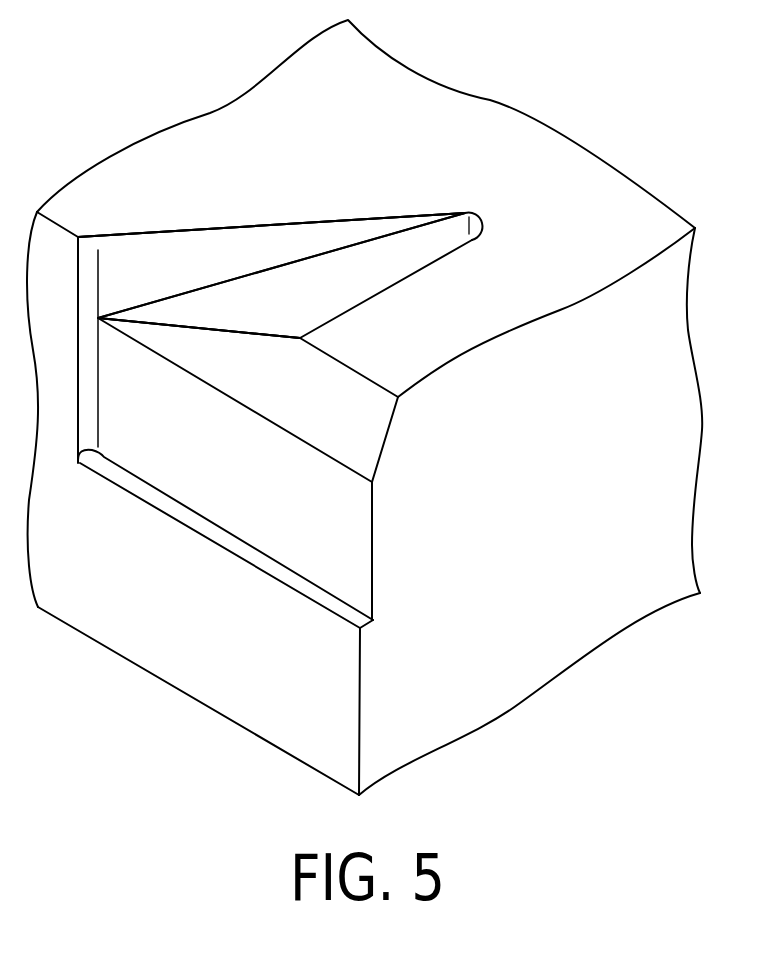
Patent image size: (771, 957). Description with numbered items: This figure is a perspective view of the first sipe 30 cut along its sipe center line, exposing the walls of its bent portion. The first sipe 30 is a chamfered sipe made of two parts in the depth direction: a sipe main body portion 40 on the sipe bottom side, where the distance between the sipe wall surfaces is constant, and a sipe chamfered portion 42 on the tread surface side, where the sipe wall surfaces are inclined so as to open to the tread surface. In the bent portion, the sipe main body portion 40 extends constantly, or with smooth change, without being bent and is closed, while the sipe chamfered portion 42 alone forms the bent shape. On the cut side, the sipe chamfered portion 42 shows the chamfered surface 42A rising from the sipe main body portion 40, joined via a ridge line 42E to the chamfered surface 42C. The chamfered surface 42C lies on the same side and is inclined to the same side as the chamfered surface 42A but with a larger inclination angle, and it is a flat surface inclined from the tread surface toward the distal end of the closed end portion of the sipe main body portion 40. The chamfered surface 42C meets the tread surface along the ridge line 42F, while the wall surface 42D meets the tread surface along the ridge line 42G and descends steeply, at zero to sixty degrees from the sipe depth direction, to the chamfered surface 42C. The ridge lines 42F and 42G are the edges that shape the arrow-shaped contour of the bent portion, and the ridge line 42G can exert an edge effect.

The first sipe 30 is at (202, 210).
The sipe main body portion 40 is at (200, 437).
The sipe chamfered portion 42 is at (283, 400).
The chamfered surface 42A is at (273, 347).
The chamfered surface 42C is at (393, 267).
The wall surface 42D is at (155, 250).
The ridge line 42E is at (290, 333).
The ridge line 42F is at (448, 253).
The ridge line 42G is at (237, 225).